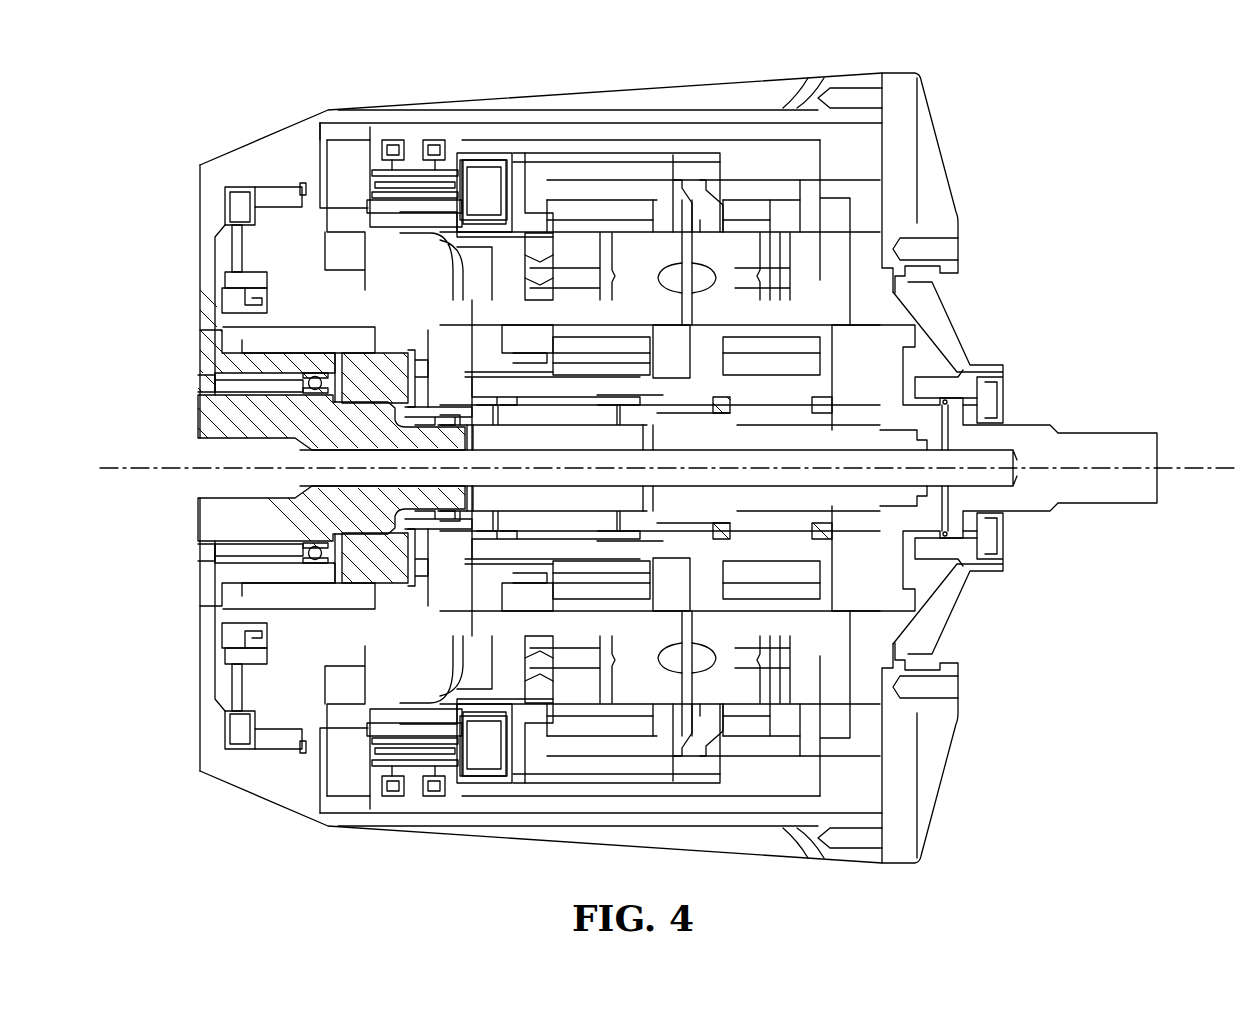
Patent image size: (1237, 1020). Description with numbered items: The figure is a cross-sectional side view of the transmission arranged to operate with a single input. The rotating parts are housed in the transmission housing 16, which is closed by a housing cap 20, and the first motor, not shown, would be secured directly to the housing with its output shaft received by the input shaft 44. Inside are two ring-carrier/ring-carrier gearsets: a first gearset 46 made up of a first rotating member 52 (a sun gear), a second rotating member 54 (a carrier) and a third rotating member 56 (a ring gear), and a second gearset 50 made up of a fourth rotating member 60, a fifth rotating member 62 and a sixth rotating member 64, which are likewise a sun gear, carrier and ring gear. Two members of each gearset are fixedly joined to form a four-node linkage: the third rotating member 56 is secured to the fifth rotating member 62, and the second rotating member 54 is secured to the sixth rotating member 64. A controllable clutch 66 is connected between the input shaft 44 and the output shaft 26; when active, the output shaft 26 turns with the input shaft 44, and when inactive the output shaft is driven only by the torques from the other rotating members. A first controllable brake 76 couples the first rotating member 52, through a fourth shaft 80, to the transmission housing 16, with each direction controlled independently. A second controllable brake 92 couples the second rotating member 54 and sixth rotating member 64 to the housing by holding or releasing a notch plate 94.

The transmission housing 16 is at (655, 78).
The housing cap 20 is at (945, 152).
The output shaft 26 is at (1105, 433).
The input shaft 44 is at (196, 410).
The first gearset 46 is at (574, 148).
The second gearset 50 is at (754, 126).
The first rotating member 52 is at (580, 352).
The second rotating member 54 is at (548, 185).
The third rotating member 56 is at (543, 180).
The fourth rotating member 60 is at (865, 312).
The fifth rotating member 62 is at (690, 220).
The sixth rotating member 64 is at (783, 190).
The controllable clutch 66 is at (390, 292).
The first controllable brake 76 is at (392, 140).
The fourth shaft 80 is at (340, 208).
The second controllable brake 92 is at (437, 145).
The notch plate 94 is at (490, 217).